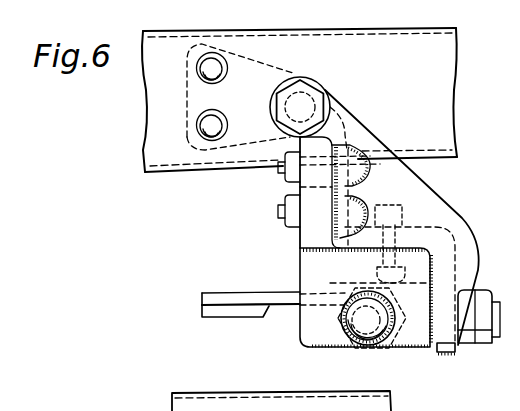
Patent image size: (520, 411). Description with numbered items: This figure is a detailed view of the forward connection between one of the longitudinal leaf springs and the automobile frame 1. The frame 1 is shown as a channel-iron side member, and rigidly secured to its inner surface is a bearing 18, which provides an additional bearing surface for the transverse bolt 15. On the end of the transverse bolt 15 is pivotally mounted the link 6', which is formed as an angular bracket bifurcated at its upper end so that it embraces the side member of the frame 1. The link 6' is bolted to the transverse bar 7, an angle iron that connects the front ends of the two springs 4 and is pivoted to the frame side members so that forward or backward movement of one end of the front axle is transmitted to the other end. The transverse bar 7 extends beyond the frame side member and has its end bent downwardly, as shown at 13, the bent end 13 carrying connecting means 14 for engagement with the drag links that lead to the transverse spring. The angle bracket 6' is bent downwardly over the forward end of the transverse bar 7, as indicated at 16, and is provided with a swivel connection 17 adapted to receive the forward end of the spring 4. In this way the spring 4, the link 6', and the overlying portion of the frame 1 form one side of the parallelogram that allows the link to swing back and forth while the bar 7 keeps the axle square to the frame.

The frame 1 is at (445, 63).
The bearings 18 is at (285, 71).
The transverse bolt 15 is at (300, 106).
The link 6' is at (402, 217).
The transverse bar 7 is at (308, 242).
The springs 4 is at (252, 311).
The downwardly bent ends 13 is at (322, 341).
The connecting means 14 is at (348, 343).
The downwardly bent portion 16 is at (479, 305).
The swivel connection 17 is at (405, 343).